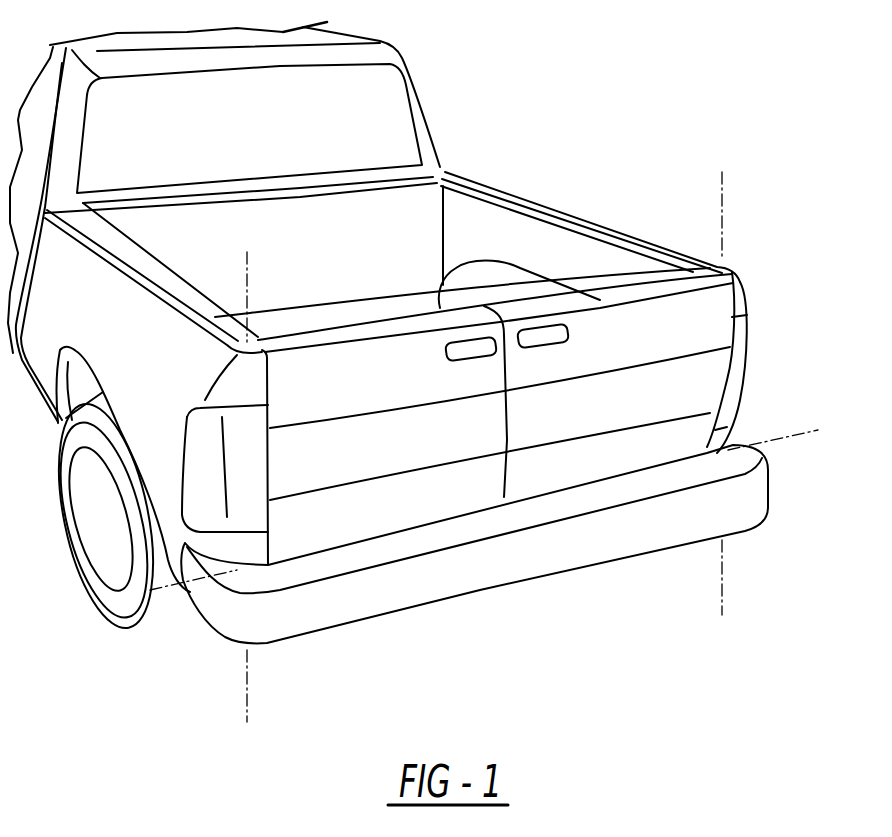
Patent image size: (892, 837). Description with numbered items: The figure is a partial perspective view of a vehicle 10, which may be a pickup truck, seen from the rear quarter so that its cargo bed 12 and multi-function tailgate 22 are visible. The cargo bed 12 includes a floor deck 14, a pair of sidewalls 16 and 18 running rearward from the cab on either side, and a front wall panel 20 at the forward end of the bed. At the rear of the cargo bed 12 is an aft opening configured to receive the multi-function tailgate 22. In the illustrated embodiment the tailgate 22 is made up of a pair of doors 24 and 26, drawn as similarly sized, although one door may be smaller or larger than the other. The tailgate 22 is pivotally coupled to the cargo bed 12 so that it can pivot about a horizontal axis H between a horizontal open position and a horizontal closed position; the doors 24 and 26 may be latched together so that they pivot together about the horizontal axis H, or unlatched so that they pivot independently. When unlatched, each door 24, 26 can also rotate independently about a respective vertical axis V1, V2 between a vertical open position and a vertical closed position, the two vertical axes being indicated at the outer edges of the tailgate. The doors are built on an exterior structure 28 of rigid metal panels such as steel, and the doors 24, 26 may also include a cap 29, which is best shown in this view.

The vehicle 10 is at (420, 58).
The cargo bed 12 is at (493, 182).
The floor deck 14 is at (407, 298).
The sidewall 16 is at (594, 228).
The sidewall 18 is at (136, 258).
The front wall panel 20 is at (350, 274).
The multi-function tailgate 22 is at (700, 328).
The door 24 is at (670, 380).
The door 26 is at (337, 520).
The exterior structure 28 is at (710, 360).
The cap 29 is at (587, 295).
The vertical axis V1 is at (727, 377).
The vertical axis V2 is at (256, 469).
The horizontal axis H is at (498, 500).